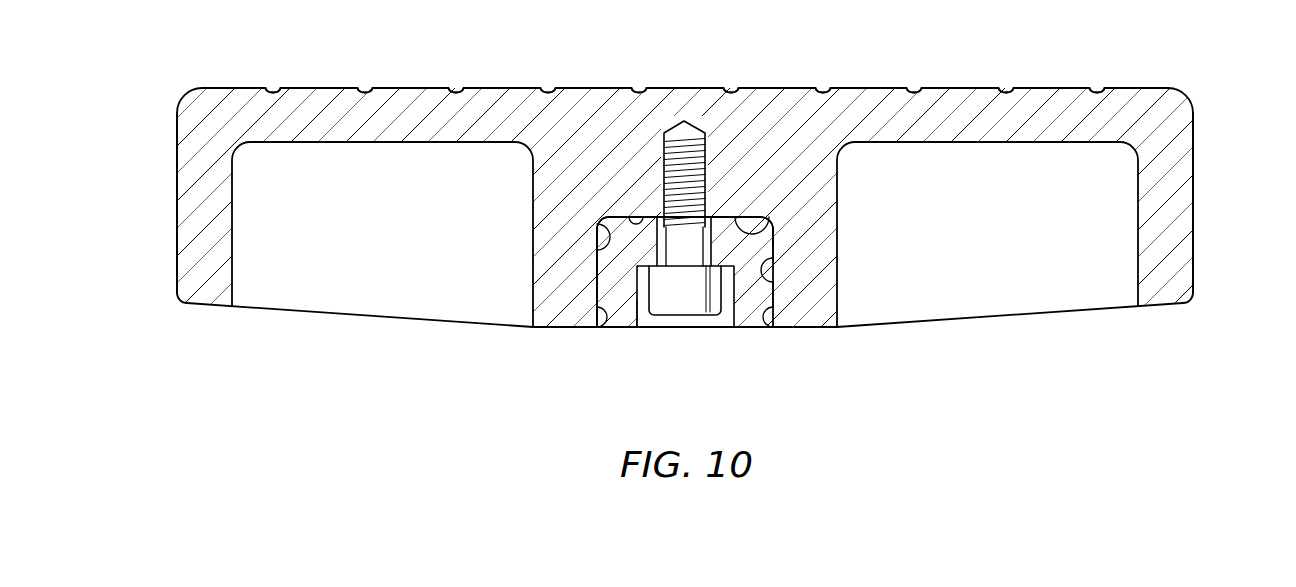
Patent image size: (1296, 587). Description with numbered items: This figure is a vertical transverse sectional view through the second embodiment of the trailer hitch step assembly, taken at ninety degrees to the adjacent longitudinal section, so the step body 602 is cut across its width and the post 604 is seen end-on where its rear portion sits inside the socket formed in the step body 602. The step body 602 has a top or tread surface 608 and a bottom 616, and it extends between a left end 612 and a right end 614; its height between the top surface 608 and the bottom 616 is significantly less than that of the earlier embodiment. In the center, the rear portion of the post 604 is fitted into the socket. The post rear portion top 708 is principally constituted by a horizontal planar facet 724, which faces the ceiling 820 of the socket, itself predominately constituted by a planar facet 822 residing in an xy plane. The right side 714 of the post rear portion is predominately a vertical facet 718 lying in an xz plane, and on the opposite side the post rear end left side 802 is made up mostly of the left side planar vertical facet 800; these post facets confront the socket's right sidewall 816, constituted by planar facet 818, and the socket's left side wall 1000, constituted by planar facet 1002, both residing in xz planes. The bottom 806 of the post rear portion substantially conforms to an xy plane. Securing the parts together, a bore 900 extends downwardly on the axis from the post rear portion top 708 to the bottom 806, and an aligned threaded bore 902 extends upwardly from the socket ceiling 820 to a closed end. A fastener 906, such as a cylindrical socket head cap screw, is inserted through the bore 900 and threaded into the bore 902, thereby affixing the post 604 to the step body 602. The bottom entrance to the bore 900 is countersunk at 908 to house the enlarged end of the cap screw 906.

The step body 602 is at (879, 71).
The post 604 is at (612, 290).
The top or tread surface 608 is at (485, 88).
The left end 612 is at (1193, 202).
The right end 614 is at (177, 215).
The bottom 616 is at (557, 328).
The post rear portion top 708 is at (715, 210).
The right side of post rear portion 714 is at (600, 237).
The vertical facet 718 is at (597, 268).
The horizontal planar facet 724 is at (752, 220).
The left side planar vertical facet 800 is at (775, 250).
The post rear end left side 802 is at (775, 273).
The bottom of post rear portion 806 is at (753, 312).
The right sidewall 816 is at (600, 225).
The planar facet 818 is at (610, 328).
The ceiling 820 is at (636, 218).
The planar facet 822 is at (778, 220).
The bore 900 is at (712, 300).
The bore 902 is at (707, 175).
The fastener 906 is at (683, 298).
The countersink 908 is at (657, 328).
The left side wall 1000 is at (775, 290).
The planar facet 1002 is at (762, 328).